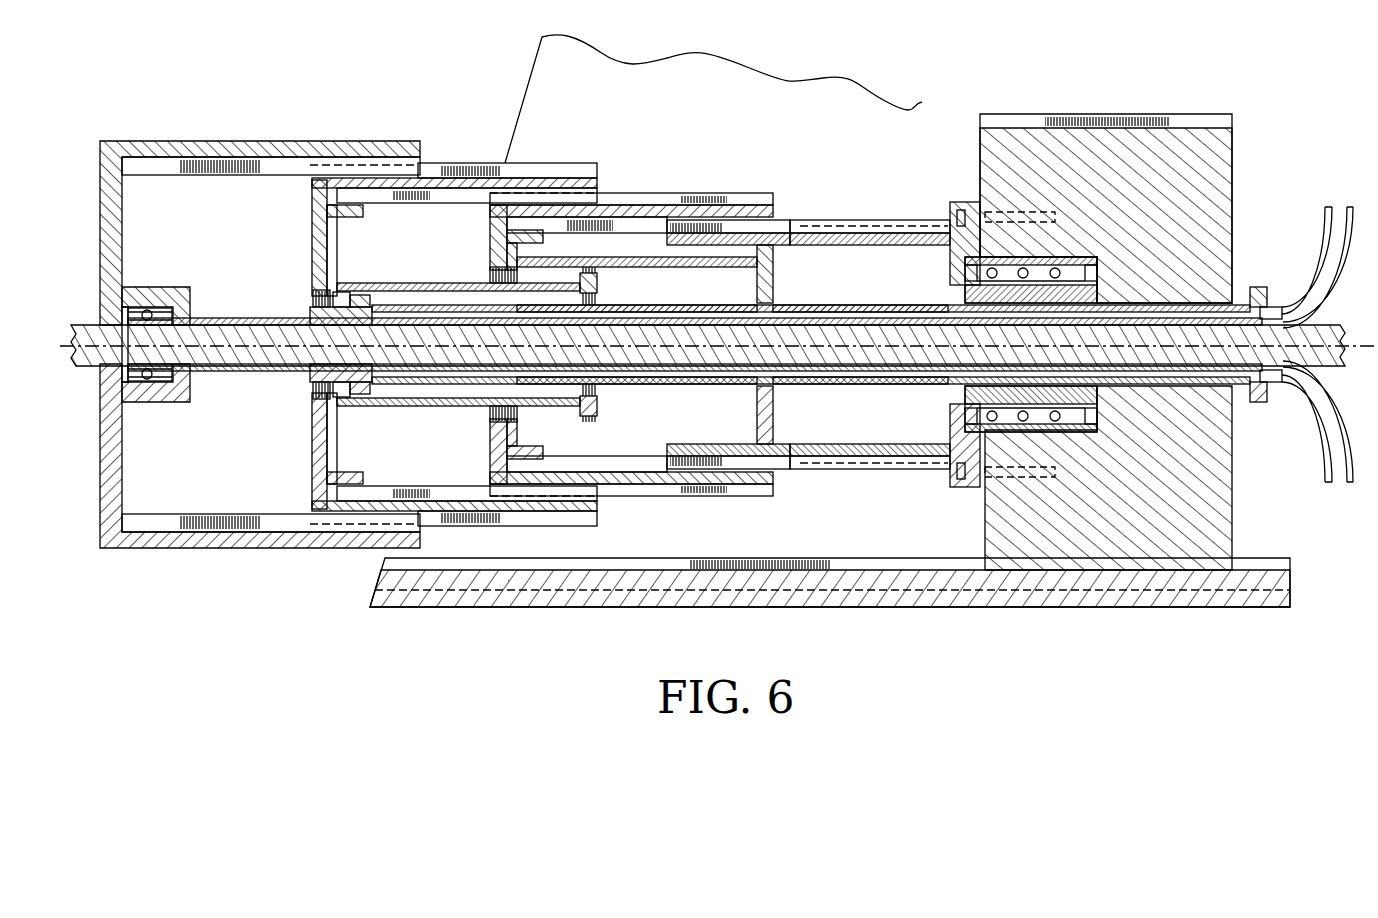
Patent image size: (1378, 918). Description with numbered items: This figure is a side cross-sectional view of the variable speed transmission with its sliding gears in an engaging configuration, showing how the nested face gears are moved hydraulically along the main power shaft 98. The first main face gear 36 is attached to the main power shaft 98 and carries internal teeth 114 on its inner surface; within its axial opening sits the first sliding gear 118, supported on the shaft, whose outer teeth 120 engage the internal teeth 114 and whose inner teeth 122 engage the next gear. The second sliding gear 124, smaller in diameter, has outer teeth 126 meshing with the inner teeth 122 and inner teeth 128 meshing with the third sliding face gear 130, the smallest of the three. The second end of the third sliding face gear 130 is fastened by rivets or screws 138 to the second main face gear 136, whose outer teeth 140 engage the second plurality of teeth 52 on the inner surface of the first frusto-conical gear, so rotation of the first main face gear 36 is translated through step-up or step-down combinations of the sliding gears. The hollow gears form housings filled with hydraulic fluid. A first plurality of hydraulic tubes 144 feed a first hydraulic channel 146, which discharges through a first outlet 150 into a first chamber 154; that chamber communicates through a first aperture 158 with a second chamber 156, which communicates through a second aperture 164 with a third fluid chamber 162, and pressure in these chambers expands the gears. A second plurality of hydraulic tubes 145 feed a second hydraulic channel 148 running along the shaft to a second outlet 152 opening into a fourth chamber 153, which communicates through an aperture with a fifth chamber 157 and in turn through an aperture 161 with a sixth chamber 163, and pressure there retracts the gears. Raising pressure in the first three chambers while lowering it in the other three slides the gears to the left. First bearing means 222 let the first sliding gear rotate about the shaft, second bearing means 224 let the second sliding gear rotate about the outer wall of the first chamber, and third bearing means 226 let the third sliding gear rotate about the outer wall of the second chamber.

The first main face gear 36 is at (108, 530).
The second plurality of teeth 52 is at (873, 565).
The main power shaft 98 is at (1315, 322).
The internal teeth 114 is at (273, 176).
The first sliding gear 118 is at (440, 163).
The teeth 120 is at (482, 163).
The teeth 122 is at (392, 208).
The second sliding gear 124 is at (742, 186).
The teeth 126 is at (657, 192).
The teeth 128 is at (633, 212).
The third sliding face gear 130 is at (857, 210).
The second main face gear 136 is at (1097, 106).
The rivets or screws 138 is at (978, 485).
The teeth 140 is at (1097, 570).
The first plurality of hydraulic tubes 144 is at (1328, 209).
The second plurality of hydraulic tubes 145 is at (1328, 468).
The first hydraulic channel 146 is at (915, 317).
The second hydraulic channel 148 is at (930, 385).
The first outlet 150 is at (380, 305).
The second outlet 152 is at (378, 392).
The fourth chamber 153 is at (432, 390).
The first chamber 154 is at (425, 300).
The second chamber 156 is at (672, 295).
The fifth chamber 157 is at (632, 415).
The first aperture 158 is at (642, 222).
The aperture 161 is at (757, 406).
The third fluid chamber 162 is at (888, 277).
The sixth chamber 163 is at (875, 420).
The second aperture 164 is at (757, 286).
The first bearing means 222 is at (313, 302).
The second bearing means 224 is at (492, 276).
The third bearing means 226 is at (797, 220).